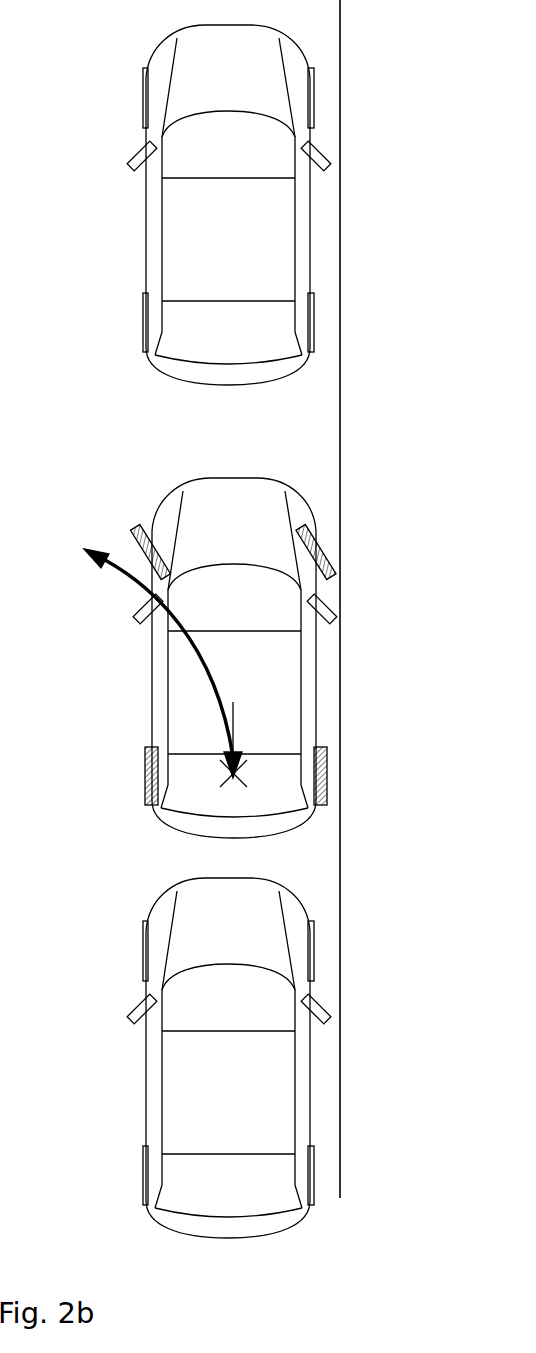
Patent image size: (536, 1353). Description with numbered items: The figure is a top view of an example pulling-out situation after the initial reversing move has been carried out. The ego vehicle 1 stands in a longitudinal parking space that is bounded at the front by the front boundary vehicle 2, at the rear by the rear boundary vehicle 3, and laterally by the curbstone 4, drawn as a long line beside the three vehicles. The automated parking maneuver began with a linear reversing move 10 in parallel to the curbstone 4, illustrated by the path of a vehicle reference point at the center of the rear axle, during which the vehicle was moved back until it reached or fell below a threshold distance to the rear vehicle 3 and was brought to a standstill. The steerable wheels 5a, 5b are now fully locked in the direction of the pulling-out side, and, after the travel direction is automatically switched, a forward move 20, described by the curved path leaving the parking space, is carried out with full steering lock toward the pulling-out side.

The ego vehicle 1 is at (243, 658).
The front boundary vehicle 2 is at (152, 238).
The rear boundary vehicle 3 is at (155, 1092).
The curbstone 4 is at (342, 850).
The steerable wheel 5a is at (150, 528).
The steerable wheel 5b is at (322, 528).
The reversing move 10 is at (233, 718).
The forward move 20 is at (197, 655).